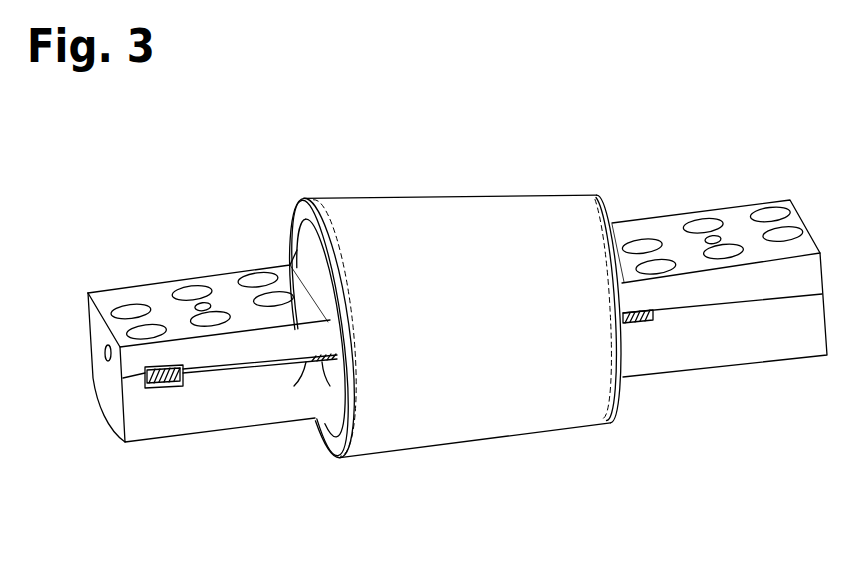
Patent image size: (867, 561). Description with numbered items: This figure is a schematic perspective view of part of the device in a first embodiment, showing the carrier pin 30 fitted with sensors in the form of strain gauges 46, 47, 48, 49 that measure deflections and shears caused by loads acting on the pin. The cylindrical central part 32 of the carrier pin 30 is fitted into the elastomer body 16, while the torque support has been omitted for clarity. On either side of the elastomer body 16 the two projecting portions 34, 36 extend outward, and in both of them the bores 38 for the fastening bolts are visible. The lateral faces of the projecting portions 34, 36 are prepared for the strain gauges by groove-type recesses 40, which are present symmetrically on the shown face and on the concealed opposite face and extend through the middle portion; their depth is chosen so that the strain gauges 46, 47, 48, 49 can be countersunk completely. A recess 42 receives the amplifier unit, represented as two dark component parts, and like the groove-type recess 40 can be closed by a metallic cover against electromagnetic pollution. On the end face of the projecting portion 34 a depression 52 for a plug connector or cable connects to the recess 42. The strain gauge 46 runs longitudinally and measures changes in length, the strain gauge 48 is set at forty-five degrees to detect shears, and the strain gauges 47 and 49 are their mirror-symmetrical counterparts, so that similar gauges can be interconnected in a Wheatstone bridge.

The elastomer body 16 is at (358, 210).
The carrier pin 30 is at (660, 162).
The cylindrical central part 32 is at (312, 241).
The projecting portion 34 is at (143, 433).
The projecting portion 36 is at (787, 332).
The bores 38 is at (128, 298).
The groove-type recesses 40 is at (215, 372).
The recess 42 is at (167, 367).
The strain gauge 46 is at (310, 365).
The strain gauge 47 is at (645, 321).
The strain gauge 48 is at (325, 365).
The strain gauge 49 is at (632, 321).
The depression 52 is at (121, 377).